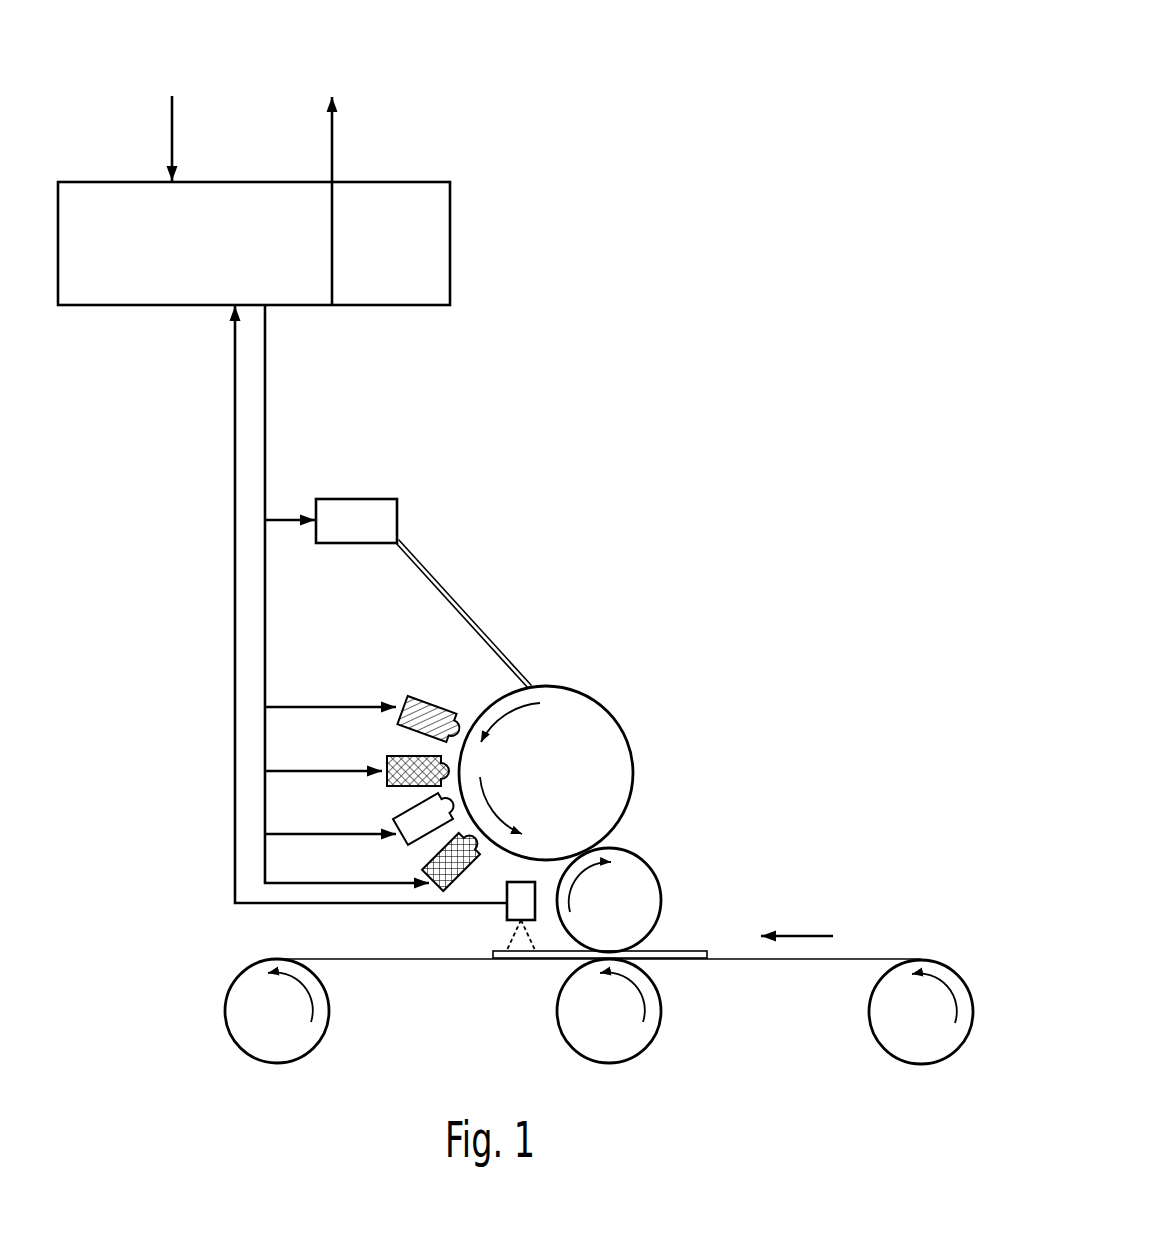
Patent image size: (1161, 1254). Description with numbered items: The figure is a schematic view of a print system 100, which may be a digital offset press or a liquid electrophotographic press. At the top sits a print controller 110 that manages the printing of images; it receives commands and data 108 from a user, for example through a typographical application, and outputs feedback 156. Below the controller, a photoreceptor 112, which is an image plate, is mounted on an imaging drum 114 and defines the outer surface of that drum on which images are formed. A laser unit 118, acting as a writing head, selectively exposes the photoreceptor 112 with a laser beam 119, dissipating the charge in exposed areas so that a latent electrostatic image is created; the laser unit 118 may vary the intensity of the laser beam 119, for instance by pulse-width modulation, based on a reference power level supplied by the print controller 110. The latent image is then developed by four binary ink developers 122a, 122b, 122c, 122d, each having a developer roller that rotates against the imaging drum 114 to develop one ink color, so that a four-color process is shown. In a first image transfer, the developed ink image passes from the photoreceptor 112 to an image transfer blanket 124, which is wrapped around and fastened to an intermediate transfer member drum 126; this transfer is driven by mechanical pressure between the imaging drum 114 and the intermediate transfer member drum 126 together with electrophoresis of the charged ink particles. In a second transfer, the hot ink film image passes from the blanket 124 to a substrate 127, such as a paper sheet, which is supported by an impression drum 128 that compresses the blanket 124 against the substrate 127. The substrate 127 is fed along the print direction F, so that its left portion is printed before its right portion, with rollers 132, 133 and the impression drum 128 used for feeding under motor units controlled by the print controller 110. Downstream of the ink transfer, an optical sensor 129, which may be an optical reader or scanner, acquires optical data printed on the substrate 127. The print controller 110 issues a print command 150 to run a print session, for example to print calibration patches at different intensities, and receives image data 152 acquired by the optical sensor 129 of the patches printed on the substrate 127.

The print system 100 is at (767, 96).
The commands and data 108 is at (171, 140).
The print controller 110 is at (450, 240).
The photoreceptor 112 is at (608, 708).
The imaging drum 114 is at (567, 789).
The laser unit 118 is at (359, 545).
The laser beam 119 is at (473, 608).
The binary ink developer 122a is at (408, 697).
The binary ink developer 122b is at (387, 762).
The binary ink developer 122c is at (398, 822).
The binary ink developer 122d is at (428, 870).
The image transfer blanket 124 is at (637, 852).
The intermediate transfer member drum 126 is at (631, 916).
The substrate 127 is at (665, 950).
The impression drum 128 is at (631, 1027).
The optical sensor 129 is at (507, 913).
The roller 132 is at (299, 1027).
The roller 133 is at (943, 1028).
The print command 150 is at (266, 352).
The image data 152 is at (234, 354).
The feedback 156 is at (333, 135).